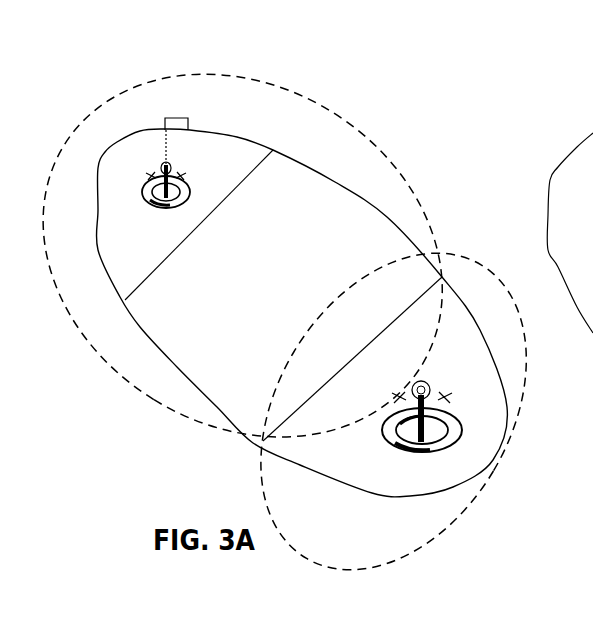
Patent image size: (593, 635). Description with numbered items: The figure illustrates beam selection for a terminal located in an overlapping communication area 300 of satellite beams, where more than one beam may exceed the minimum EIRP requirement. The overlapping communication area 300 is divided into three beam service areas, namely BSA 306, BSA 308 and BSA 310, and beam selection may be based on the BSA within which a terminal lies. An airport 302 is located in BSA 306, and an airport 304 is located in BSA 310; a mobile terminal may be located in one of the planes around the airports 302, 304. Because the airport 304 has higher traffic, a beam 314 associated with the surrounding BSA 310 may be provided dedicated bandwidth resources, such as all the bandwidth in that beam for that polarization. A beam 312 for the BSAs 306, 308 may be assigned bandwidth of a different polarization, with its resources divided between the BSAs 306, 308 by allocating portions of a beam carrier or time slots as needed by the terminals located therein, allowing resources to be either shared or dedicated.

The overlapping communication area 300 is at (301, 301).
The airport 302 is at (214, 155).
The airport 304 is at (463, 399).
The BSA 306 is at (166, 177).
The BSA 308 is at (283, 295).
The BSA 310 is at (421, 432).
The beam 312 is at (255, 255).
The beam 314 is at (393, 411).